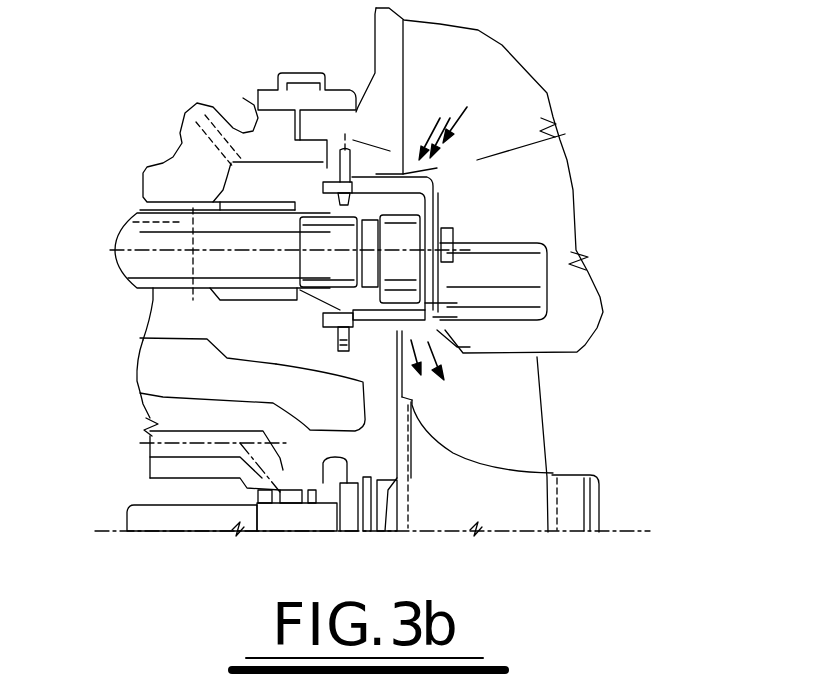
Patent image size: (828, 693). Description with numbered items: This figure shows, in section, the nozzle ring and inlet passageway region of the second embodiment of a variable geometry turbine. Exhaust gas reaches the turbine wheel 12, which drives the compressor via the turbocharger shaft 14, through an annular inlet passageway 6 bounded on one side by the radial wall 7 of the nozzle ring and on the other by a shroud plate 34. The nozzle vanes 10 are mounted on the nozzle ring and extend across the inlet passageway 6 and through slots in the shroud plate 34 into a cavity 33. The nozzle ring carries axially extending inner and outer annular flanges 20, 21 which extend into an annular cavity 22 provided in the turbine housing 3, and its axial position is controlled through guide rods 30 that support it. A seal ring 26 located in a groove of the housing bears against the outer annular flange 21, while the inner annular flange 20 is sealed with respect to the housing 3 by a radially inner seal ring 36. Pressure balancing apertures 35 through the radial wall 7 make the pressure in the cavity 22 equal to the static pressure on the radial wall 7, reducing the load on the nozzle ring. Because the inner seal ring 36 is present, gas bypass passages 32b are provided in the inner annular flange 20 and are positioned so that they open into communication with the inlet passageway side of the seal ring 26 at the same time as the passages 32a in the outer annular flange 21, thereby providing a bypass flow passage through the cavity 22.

The turbine housing 3 is at (383, 100).
The annular inlet passageway 6 is at (447, 138).
The radial wall 7 is at (525, 296).
The nozzle vanes 10 is at (527, 288).
The turbine wheel 12 is at (548, 511).
The turbocharger shaft 14 is at (192, 515).
The inner annular flange 20 is at (338, 311).
The outer annular flange 21 is at (373, 213).
The annular cavity 22 is at (253, 313).
The seal ring 26 is at (404, 137).
The guide rods 30 is at (148, 234).
The passages 32a is at (404, 182).
The gas bypass passages 32b is at (358, 308).
The cavity 33 is at (527, 251).
The shroud plate 34 is at (448, 233).
The pressure balancing apertures 35 is at (412, 273).
The seal ring 36 is at (345, 349).